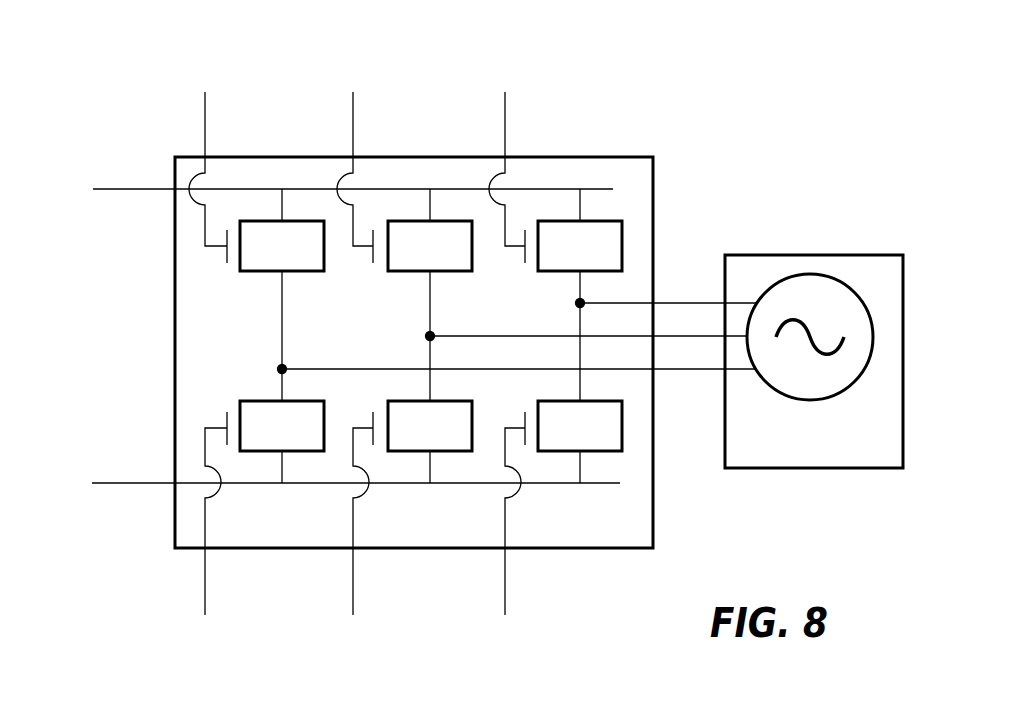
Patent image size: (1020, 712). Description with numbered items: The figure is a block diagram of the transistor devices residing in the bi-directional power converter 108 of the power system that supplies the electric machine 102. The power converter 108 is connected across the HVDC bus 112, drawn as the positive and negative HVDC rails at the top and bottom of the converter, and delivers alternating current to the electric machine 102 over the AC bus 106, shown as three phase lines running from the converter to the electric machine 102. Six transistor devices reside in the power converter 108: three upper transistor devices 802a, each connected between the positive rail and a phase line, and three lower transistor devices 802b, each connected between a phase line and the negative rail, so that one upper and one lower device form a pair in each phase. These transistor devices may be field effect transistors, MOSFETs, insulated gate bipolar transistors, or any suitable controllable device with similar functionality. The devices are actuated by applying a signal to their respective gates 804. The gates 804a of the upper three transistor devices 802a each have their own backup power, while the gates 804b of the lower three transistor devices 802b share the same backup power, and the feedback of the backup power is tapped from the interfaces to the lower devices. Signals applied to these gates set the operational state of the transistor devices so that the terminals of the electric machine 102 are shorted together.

The electric machine 102 is at (814, 361).
The AC bus 106 is at (678, 445).
The bi-directional power converter 108 is at (414, 352).
The HVDC bus 112 is at (102, 502).
The upper transistor devices 802a is at (405, 214).
The lower transistor devices 802b is at (413, 474).
The gates 804 is at (213, 257).
The gates of the upper transistor devices 804a is at (177, 97).
The gates of the lower transistor devices 804b is at (185, 613).